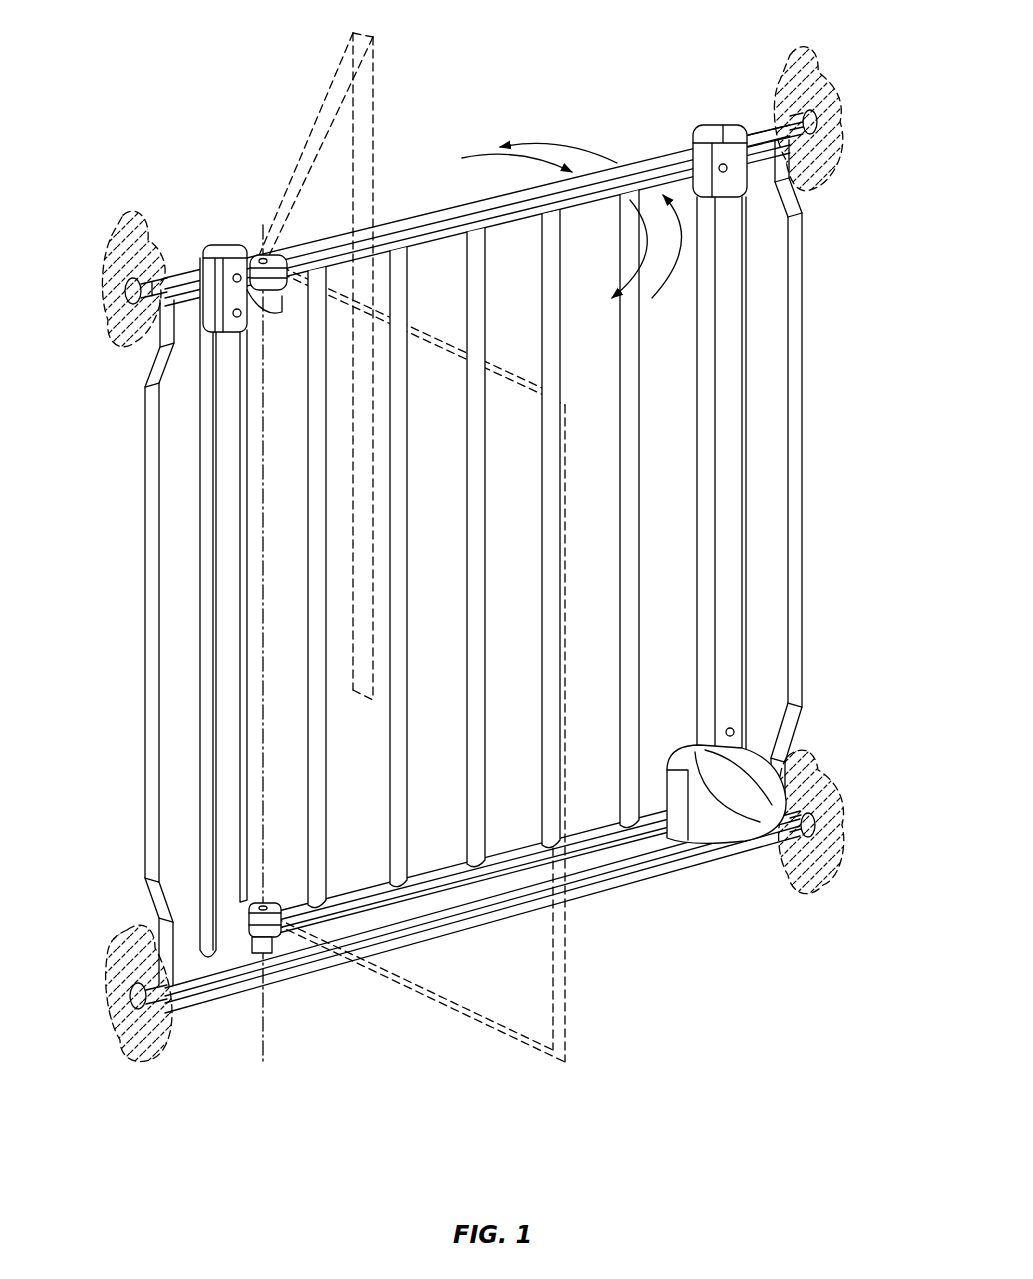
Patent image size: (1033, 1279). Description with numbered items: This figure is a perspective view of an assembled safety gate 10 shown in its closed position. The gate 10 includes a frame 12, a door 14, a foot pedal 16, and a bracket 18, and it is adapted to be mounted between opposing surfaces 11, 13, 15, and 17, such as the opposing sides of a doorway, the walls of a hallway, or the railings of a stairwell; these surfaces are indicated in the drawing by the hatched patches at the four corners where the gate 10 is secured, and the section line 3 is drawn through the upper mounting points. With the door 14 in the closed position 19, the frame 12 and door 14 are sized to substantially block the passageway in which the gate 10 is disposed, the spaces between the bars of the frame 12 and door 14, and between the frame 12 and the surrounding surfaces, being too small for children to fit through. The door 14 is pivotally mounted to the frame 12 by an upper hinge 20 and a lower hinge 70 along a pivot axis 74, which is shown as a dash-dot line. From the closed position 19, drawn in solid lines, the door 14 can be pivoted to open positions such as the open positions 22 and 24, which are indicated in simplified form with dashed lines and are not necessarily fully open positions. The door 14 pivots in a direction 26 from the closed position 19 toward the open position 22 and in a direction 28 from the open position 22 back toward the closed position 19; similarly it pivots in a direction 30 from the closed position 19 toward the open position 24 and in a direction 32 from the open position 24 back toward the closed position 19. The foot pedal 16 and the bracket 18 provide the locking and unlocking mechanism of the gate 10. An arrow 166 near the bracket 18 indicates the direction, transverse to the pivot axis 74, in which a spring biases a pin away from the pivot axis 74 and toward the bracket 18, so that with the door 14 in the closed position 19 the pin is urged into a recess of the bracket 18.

The gate 10 is at (867, 47).
The opposing surface 11 is at (125, 230).
The frame 12 is at (808, 492).
The opposing surface 13 is at (817, 187).
The door 14 is at (478, 193).
The opposing surface 15 is at (130, 950).
The foot pedal 16 is at (747, 808).
The opposing surface 17 is at (815, 860).
The bracket 18 is at (700, 137).
The closed position 19 is at (645, 153).
The upper hinge 20 is at (238, 232).
The open position 22 is at (335, 48).
The open position 24 is at (598, 1000).
The direction 26 is at (550, 143).
The direction 28 is at (478, 153).
The direction 30 is at (650, 270).
The direction 32 is at (652, 300).
The section line 3- 3 is at (133, 292).
The lower hinge 70 is at (290, 891).
The pivot axis 74 is at (265, 1052).
The arrow 166 is at (770, 107).